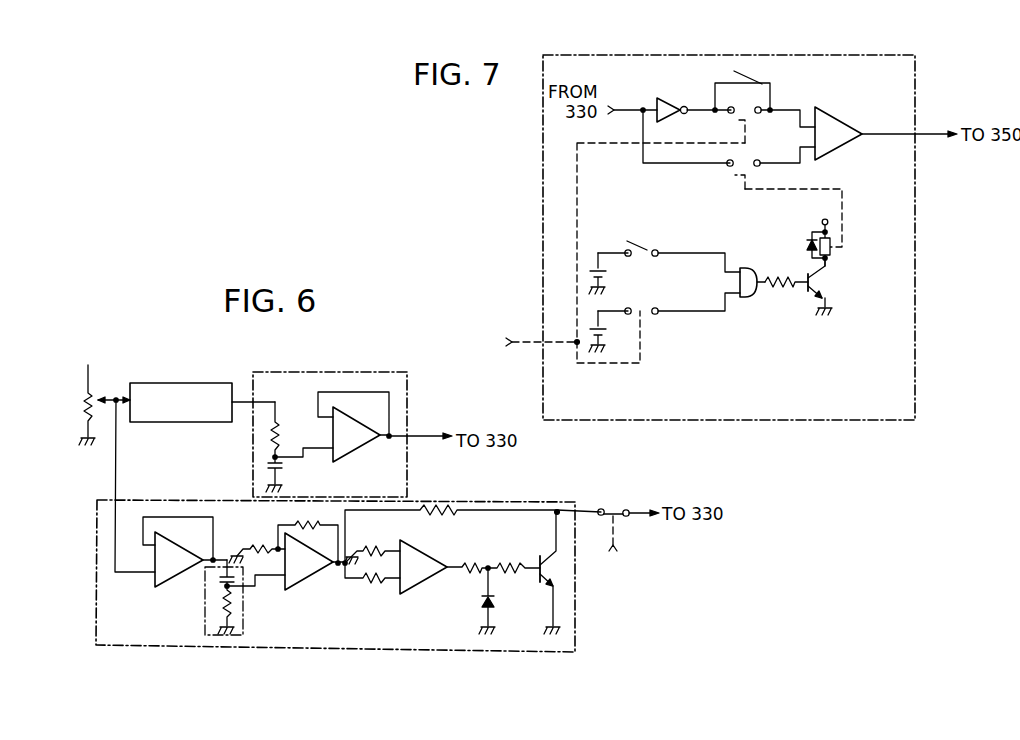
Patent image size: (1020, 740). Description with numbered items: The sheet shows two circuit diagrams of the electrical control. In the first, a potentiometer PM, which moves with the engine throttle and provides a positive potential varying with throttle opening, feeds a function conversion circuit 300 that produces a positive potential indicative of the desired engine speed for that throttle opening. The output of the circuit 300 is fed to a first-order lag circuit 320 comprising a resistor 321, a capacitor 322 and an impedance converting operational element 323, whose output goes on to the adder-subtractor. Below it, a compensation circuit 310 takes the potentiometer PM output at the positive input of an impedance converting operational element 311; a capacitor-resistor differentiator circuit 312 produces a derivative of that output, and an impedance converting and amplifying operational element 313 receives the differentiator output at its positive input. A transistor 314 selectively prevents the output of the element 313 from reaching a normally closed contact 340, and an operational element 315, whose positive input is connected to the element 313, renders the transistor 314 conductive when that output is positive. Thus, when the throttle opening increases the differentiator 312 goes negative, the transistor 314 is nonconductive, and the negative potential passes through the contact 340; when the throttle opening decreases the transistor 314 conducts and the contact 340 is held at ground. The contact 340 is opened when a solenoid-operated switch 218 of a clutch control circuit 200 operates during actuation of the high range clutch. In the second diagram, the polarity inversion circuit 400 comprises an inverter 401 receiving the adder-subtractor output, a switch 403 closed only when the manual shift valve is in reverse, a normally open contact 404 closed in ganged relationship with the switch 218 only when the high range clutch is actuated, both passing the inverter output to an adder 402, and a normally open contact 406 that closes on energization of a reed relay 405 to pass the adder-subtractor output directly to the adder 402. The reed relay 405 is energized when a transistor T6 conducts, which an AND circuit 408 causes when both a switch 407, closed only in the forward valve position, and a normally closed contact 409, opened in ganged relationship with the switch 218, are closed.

In FIG. 7, the polarity inversion circuit 400 is at (882, 57).
In FIG. 7, the inverter 401 is at (666, 101).
In FIG. 7, the adder 402 is at (843, 130).
In FIG. 7, the switch 403 is at (762, 84).
In FIG. 7, the normally open contact 404 is at (740, 120).
In FIG. 7, the reed relay 405 is at (835, 247).
In FIG. 7, the normally open contact 406 is at (738, 177).
In FIG. 7, the switch 407 is at (647, 250).
In FIG. 7, the AND circuit 408 is at (752, 278).
In FIG. 7, the normally closed contact 409 is at (648, 314).
In FIG. 7, the transistor T6 is at (805, 290).
In FIG. 7, the solenoid-operated switch 218 is at (656, 253).
In FIG. 6, the function conversion circuit 300 is at (185, 392).
In FIG. 6, the compensation circuit 310 is at (399, 647).
In FIG. 6, the impedance converting operational element 311 is at (172, 568).
In FIG. 6, the capacitor-resistor differentiator circuit 312 is at (205, 636).
In FIG. 6, the impedance converting and amplifying operational element 313 is at (308, 580).
In FIG. 6, the transistor 314 is at (555, 568).
In FIG. 6, the operational element 315 is at (418, 586).
In FIG. 6, the first-order lag circuit 320 is at (345, 367).
In FIG. 6, the resistor 321 is at (283, 420).
In FIG. 6, the capacitor 322 is at (284, 472).
In FIG. 6, the impedance converting operational element 323 is at (362, 445).
In FIG. 6, the normally closed contact 340 is at (618, 523).
In FIG. 6, the clutch control circuit 200 is at (612, 546).
In FIG. 6, the potentiometer PM is at (84, 394).